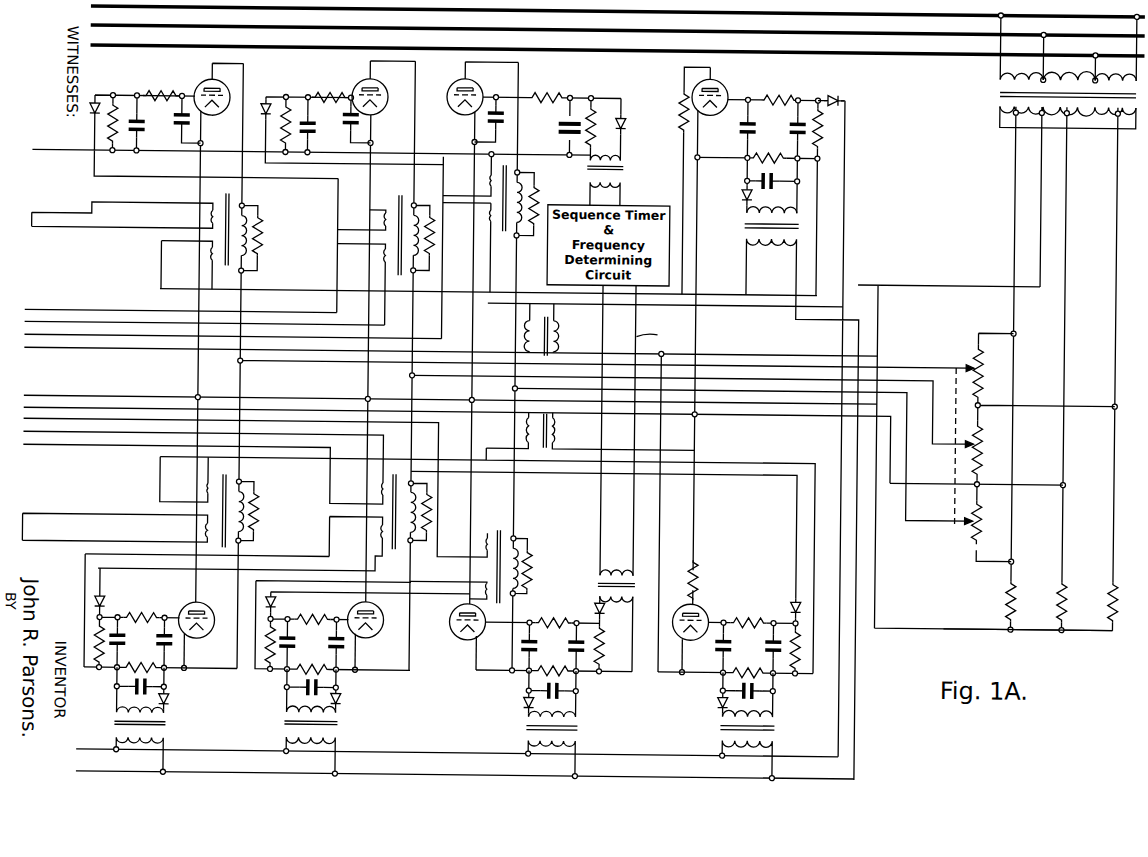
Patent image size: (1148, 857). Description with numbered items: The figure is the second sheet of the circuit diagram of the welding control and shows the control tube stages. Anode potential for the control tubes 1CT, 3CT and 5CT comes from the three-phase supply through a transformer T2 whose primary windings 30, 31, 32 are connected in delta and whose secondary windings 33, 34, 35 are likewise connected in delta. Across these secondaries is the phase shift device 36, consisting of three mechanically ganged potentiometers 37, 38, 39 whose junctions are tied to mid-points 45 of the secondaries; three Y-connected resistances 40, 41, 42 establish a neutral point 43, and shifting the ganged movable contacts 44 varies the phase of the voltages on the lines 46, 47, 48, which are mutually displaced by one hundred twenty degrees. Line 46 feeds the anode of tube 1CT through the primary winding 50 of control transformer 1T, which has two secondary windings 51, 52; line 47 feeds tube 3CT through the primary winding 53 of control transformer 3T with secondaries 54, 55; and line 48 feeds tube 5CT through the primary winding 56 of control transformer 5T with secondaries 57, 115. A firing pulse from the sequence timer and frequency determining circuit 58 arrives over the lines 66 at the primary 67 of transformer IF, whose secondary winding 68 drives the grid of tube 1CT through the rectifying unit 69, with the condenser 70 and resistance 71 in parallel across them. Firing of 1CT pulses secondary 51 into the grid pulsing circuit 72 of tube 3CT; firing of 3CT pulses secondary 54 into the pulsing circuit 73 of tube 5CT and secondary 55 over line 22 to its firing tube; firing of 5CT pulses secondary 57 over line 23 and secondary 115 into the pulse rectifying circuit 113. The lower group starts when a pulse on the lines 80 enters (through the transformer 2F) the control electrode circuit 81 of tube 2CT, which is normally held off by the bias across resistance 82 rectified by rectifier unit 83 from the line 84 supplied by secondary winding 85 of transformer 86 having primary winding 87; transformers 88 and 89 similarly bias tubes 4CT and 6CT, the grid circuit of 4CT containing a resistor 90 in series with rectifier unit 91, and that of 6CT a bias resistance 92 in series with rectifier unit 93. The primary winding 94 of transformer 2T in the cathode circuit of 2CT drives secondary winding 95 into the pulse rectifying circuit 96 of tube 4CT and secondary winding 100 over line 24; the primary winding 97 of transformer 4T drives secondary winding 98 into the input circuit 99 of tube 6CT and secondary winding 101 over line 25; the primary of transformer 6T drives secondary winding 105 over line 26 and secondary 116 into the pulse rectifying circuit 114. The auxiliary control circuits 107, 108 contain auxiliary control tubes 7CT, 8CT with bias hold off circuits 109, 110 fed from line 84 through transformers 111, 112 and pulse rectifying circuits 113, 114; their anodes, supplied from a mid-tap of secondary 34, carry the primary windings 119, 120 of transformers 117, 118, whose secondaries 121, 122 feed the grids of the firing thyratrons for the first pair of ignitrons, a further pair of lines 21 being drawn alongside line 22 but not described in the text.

The input lines 21 is at (37, 334).
The line 22 is at (37, 321).
The line 23 is at (121, 226).
The line 24 is at (37, 418).
The line 25 is at (37, 431).
The line 26 is at (114, 528).
The primary winding 30 is at (1021, 68).
The second primary winding 31 is at (1069, 70).
The third primary winding 32 is at (1115, 69).
The secondary winding 33 is at (1010, 107).
The secondary winding 34 is at (1071, 119).
The secondary winding 35 is at (1119, 131).
The phase shift device 36 is at (676, 444).
The potentiometer 37 is at (992, 373).
The potentiometer 38 is at (989, 450).
The potentiometer 39 is at (988, 522).
The resistance 40 is at (1022, 602).
The resistance 41 is at (1073, 602).
The resistance 42 is at (1123, 603).
The neutral point 43 is at (1017, 620).
The movable contacts 44 is at (949, 447).
The mid-points 45 is at (1052, 132).
The line 46 is at (741, 454).
The line 47 is at (689, 409).
The line 48 is at (604, 382).
The primary winding 50 is at (537, 204).
The secondary winding 51 is at (468, 173).
The secondary winding 52 is at (466, 247).
The primary winding 53 is at (413, 247).
The secondary winding 54 is at (364, 220).
The secondary winding 55 is at (365, 255).
The primary winding 56 is at (262, 238).
The secondary winding 57 is at (193, 219).
The sequence timer and frequency determining circuit 58 is at (530, 258).
The lines 66 is at (620, 194).
The primary winding 67 is at (619, 179).
The secondary winding 68 is at (619, 161).
The rectifying unit 69 is at (631, 129).
The condenser 70 is at (574, 124).
The resistance 71 is at (597, 118).
The grid pulsing circuit 72 is at (351, 161).
The pulsing circuit 73 is at (311, 125).
The lines 80 is at (657, 334).
The control electrode circuit 81 is at (554, 632).
The resistance 82 is at (539, 661).
The rectifier unit 83 is at (531, 699).
The line 84 is at (486, 746).
The secondary winding 85 is at (588, 708).
The transformer 86 is at (571, 725).
The primary winding 87 is at (588, 744).
The transformer 88 is at (326, 722).
The transformer 89 is at (155, 720).
The resistor 90 is at (312, 660).
The rectifier unit 91 is at (349, 694).
The bias resistance 92 is at (141, 658).
The rectifier unit 93 is at (178, 696).
The primary winding 94 is at (534, 566).
The secondary winding 95 is at (448, 584).
The pulse rectifying circuit 96 is at (362, 627).
The primary winding 97 is at (434, 509).
The secondary winding 98 is at (363, 530).
The input circuit 99 is at (161, 619).
The secondary winding 100 is at (464, 543).
The secondary winding 101 is at (360, 487).
The secondary winding 105 is at (184, 528).
The auxiliary control circuit 107 is at (775, 129).
The auxiliary control circuit 108 is at (736, 636).
The bias hold off circuit 109 is at (756, 223).
The bias hold off circuit 110 is at (709, 694).
The transformer 111 is at (747, 220).
The transformer 112 is at (734, 722).
The pulse rectifying circuit 113 is at (840, 84).
The pulse rectifying circuit 114 is at (800, 594).
The secondary winding 115 is at (186, 265).
The secondary winding 116 is at (184, 480).
The transformer 117 is at (575, 328).
The transformer 118 is at (623, 431).
The primary winding 119 is at (570, 337).
The primary winding 120 is at (569, 430).
The secondary winding 121 is at (533, 329).
The secondary winding 122 is at (529, 417).
The control tube 1CT is at (534, 103).
The control tube 2CT is at (458, 613).
The control tube 3CT is at (384, 87).
The control tube 4CT is at (376, 637).
The control tube 5CT is at (211, 87).
The control tube 6CT is at (207, 628).
The auxiliary control tube 7CT is at (714, 180).
The auxiliary control tube 8CT is at (705, 617).
The control transformer 1T is at (501, 222).
The transformer 2T is at (485, 554).
The control transformer 3T is at (388, 236).
The transformer 4T is at (398, 520).
The control transformer 5T is at (223, 236).
The transformer 6T is at (216, 508).
The transformer T2 is at (1059, 86).
The transformer IF is at (608, 179).
The filter transformer 2F is at (607, 586).